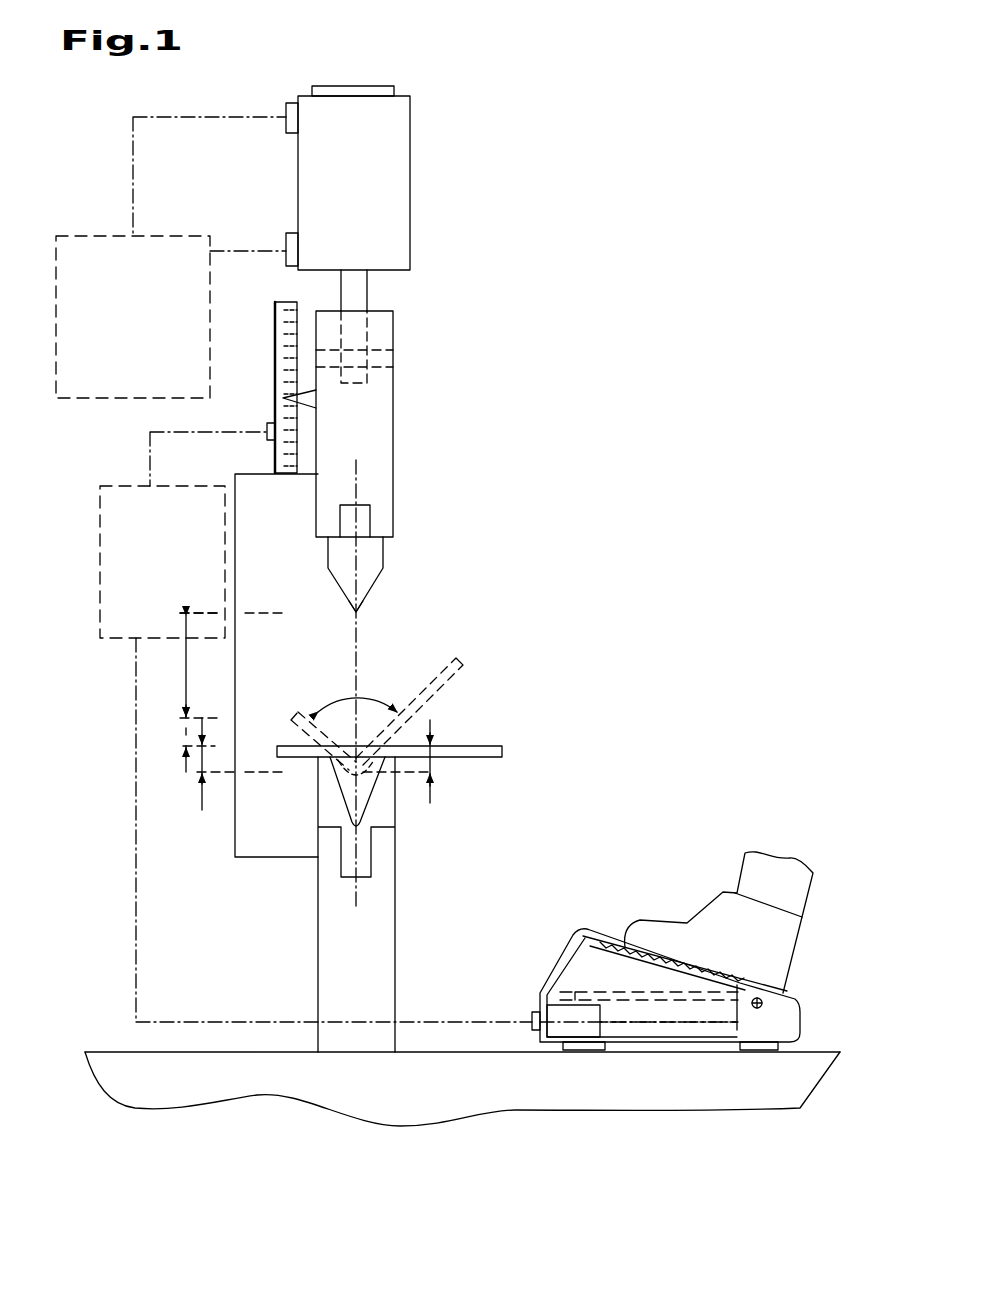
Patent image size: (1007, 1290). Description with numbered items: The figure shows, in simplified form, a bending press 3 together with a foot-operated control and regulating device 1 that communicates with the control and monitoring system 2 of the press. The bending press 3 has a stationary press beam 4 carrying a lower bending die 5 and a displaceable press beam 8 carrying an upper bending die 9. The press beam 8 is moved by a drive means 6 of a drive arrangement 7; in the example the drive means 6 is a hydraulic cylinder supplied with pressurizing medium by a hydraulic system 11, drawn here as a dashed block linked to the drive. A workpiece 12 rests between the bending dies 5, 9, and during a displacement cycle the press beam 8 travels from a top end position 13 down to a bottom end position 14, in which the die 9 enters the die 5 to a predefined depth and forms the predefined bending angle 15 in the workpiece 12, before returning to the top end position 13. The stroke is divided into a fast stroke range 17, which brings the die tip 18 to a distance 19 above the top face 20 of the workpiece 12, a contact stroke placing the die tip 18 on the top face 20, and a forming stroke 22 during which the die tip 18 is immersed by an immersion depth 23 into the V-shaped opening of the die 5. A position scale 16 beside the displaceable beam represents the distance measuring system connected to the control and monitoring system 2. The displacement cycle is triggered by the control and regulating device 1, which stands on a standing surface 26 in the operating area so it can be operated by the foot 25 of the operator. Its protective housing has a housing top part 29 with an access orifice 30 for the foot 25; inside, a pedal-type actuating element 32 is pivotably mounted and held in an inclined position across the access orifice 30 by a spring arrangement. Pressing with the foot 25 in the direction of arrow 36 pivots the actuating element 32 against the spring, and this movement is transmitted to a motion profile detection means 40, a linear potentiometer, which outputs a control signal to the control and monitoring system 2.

The control and regulating device 1 is at (681, 788).
The control and monitoring system 2 is at (125, 515).
The bending press 3 is at (518, 293).
The stationary press beam 4 is at (337, 992).
The bending die 5 is at (380, 805).
The drive means 6 is at (395, 127).
The drive arrangement 7 is at (428, 212).
The press beam 8 is at (378, 330).
The bending die 9 is at (373, 552).
The hydraulic system 11 is at (103, 252).
The workpiece 12 is at (470, 744).
The top end position 13 is at (203, 608).
The bottom end position 14 is at (277, 770).
The bending angle 15 is at (376, 692).
The position measuring scale 16 is at (266, 336).
The fast stroke range 17 is at (182, 668).
The die tip 18 is at (360, 612).
The distance 19 is at (180, 732).
The top face 20 is at (490, 738).
The forming stroke 22 is at (197, 800).
The immersion depth 23 is at (437, 764).
The foot 25 is at (760, 873).
The standing surface 26 is at (218, 1043).
The housing top part 29 is at (560, 965).
The access orifice 30 is at (619, 891).
The pedal-type actuating element 32 is at (605, 935).
The arrow 36 is at (643, 985).
The motion profile detection means 40 is at (663, 1022).